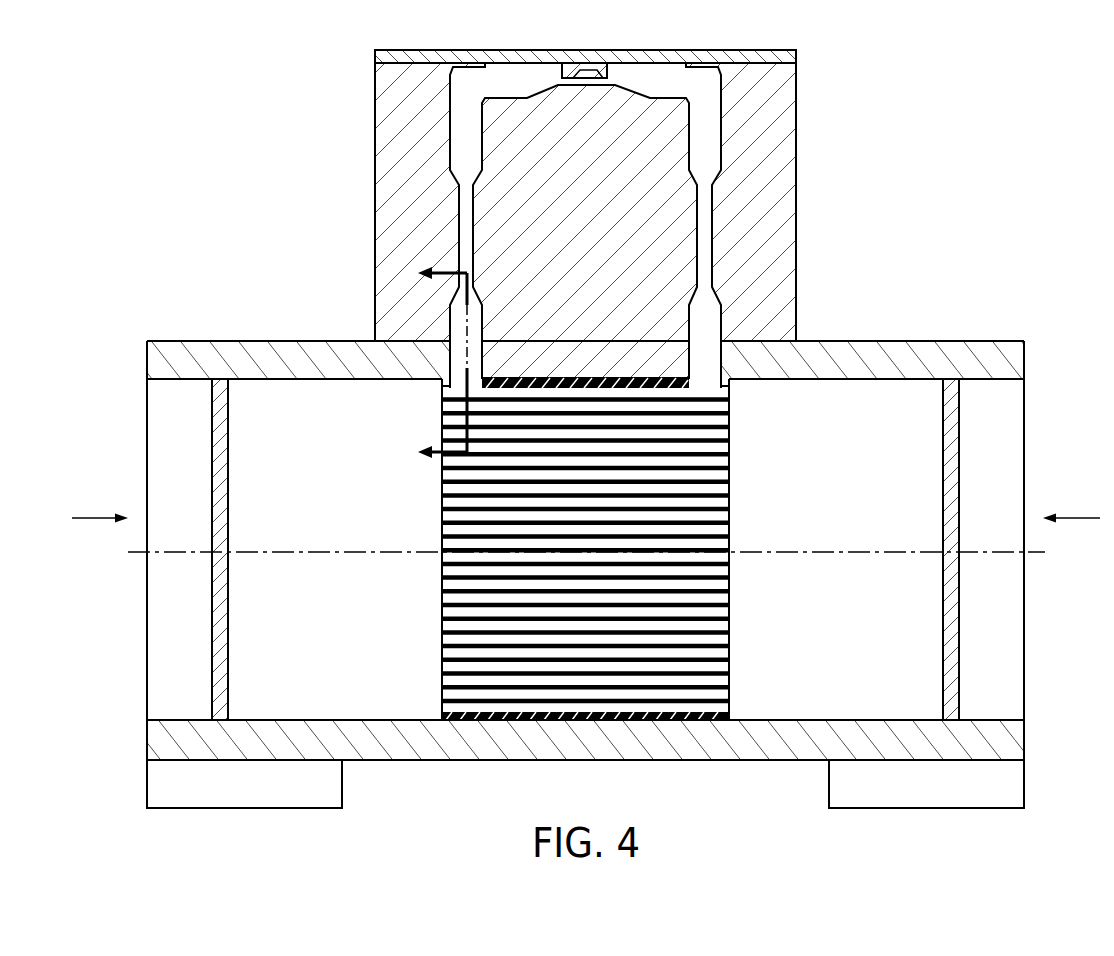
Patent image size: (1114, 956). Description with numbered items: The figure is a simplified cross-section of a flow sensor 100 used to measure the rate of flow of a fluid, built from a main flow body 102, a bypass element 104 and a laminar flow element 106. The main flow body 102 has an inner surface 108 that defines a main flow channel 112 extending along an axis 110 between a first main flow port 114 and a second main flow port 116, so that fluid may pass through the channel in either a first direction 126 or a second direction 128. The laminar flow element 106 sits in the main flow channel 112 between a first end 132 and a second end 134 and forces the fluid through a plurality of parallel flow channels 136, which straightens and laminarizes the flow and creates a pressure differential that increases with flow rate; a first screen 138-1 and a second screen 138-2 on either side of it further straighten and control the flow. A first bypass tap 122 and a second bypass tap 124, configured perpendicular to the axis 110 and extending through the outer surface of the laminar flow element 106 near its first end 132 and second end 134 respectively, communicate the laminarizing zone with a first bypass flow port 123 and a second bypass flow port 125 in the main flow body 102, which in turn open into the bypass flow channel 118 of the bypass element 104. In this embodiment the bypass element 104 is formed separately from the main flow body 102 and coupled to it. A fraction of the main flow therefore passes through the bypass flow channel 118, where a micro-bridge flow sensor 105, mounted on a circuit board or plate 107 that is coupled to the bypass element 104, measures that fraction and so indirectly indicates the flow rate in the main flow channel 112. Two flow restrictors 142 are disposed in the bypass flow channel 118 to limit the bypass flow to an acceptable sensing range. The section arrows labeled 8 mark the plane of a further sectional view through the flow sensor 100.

The flow sensor 100 is at (958, 105).
The main flow body 102 is at (539, 349).
The bypass element 104 is at (526, 202).
The flow sensor 105 is at (610, 70).
The laminar flow element 106 is at (647, 402).
The circuit board or plate 107 is at (425, 55).
The inner surface 108 is at (308, 380).
The axis 110 is at (875, 552).
The main flow channel 112 is at (351, 650).
The first main flow port 114 is at (152, 649).
The second main flow port 116 is at (1018, 648).
The bypass flow channel 118 is at (505, 73).
The first bypass tap 122 is at (459, 388).
The second bypass tap 124 is at (711, 388).
The first bypass flow port 123 is at (457, 353).
The second bypass flow port 125 is at (707, 353).
The first direction 126 is at (90, 518).
The second direction 128 is at (1078, 518).
The first end 132 is at (440, 680).
The second end 134 is at (730, 682).
The flow channels 136 is at (728, 627).
The first screen 138-1 is at (230, 488).
The second screen 138-2 is at (942, 488).
The flow restrictor 142 is at (460, 260).
The section line 8- 8 is at (426, 365).